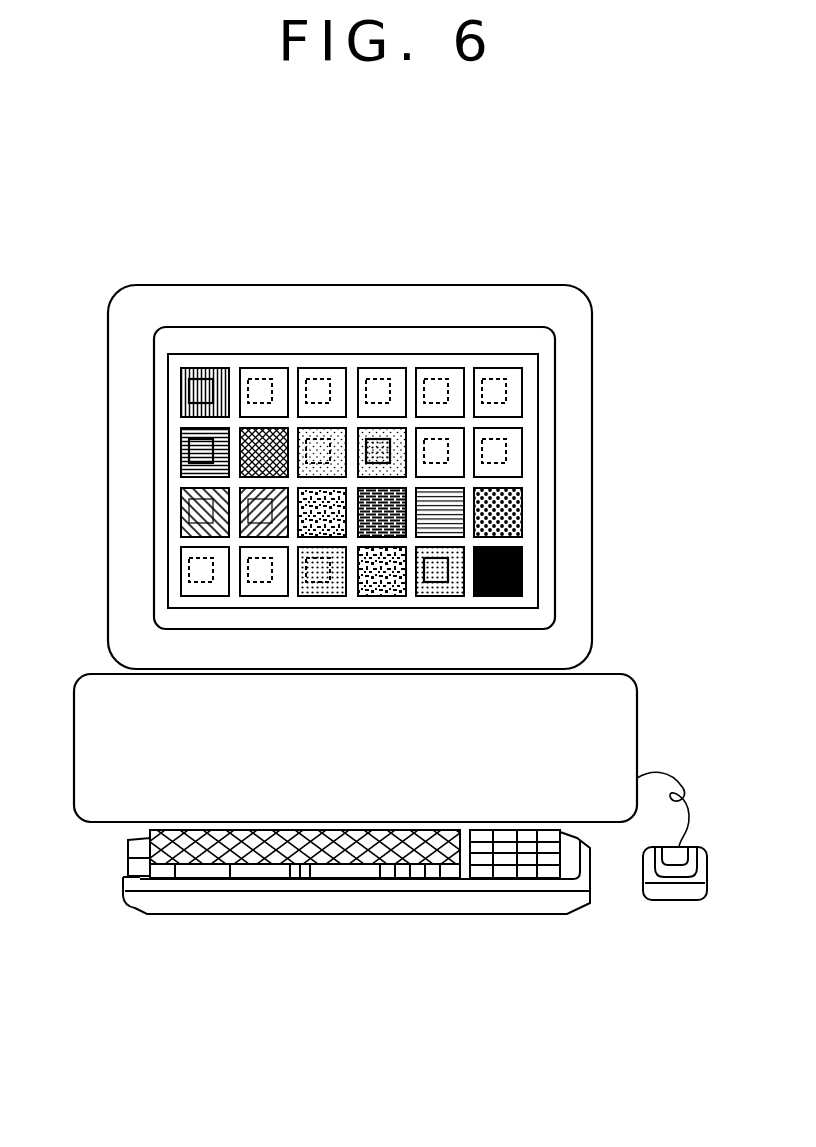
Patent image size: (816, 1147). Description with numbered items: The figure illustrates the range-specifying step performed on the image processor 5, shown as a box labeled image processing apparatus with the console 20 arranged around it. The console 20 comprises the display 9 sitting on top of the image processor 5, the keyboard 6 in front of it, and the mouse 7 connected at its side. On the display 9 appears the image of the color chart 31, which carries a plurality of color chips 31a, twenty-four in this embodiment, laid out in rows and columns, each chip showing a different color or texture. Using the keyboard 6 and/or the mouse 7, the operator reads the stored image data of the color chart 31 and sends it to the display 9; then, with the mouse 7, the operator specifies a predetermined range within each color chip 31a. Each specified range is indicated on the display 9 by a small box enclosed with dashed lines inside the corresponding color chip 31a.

The console 20 is at (222, 256).
The display 9 is at (592, 472).
The color chart 31 is at (295, 423).
The color chip 31a is at (281, 370).
The image processor 5 is at (637, 727).
The keyboard 6 is at (345, 915).
The mouse 7 is at (680, 902).